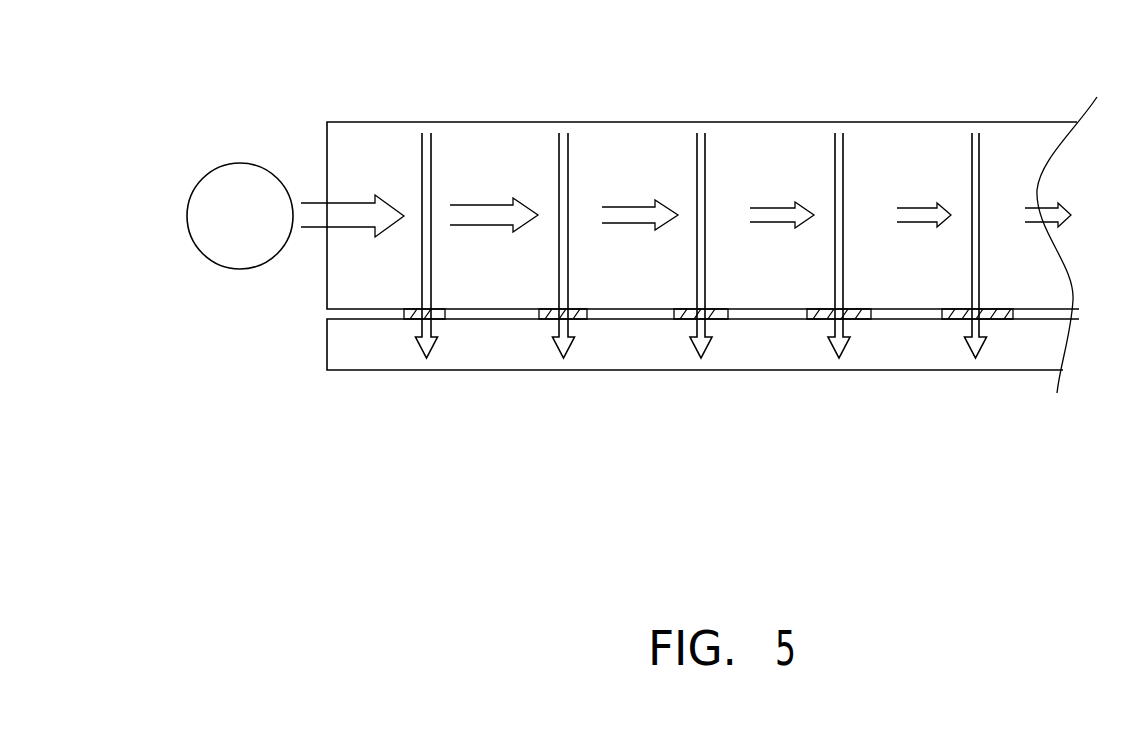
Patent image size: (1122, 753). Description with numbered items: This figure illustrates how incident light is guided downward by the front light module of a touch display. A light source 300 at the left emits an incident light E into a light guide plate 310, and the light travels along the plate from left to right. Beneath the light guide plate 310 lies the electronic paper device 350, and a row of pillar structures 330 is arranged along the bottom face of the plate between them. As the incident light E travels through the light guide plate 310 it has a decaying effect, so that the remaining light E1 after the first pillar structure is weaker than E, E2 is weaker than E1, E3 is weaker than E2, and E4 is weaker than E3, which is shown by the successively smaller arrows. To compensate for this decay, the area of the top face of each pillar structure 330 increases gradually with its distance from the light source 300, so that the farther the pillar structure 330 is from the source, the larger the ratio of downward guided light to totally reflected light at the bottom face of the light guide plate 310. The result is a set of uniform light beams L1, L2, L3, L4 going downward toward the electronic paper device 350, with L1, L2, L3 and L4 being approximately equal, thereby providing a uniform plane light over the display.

The light source 300 is at (230, 182).
The light guide plate 310 is at (363, 143).
The pillar structures 330 is at (952, 319).
The electronic paper device 350 is at (383, 324).
The light beam L1 is at (425, 223).
The light beam L2 is at (564, 223).
The light beam L3 is at (701, 223).
The light beam L4 is at (839, 223).
The incident light E is at (352, 202).
The incident light after first decay E1 is at (492, 200).
The incident light after second decay E2 is at (630, 199).
The incident light after third decay E3 is at (768, 198).
The incident light after fourth decay E4 is at (905, 197).